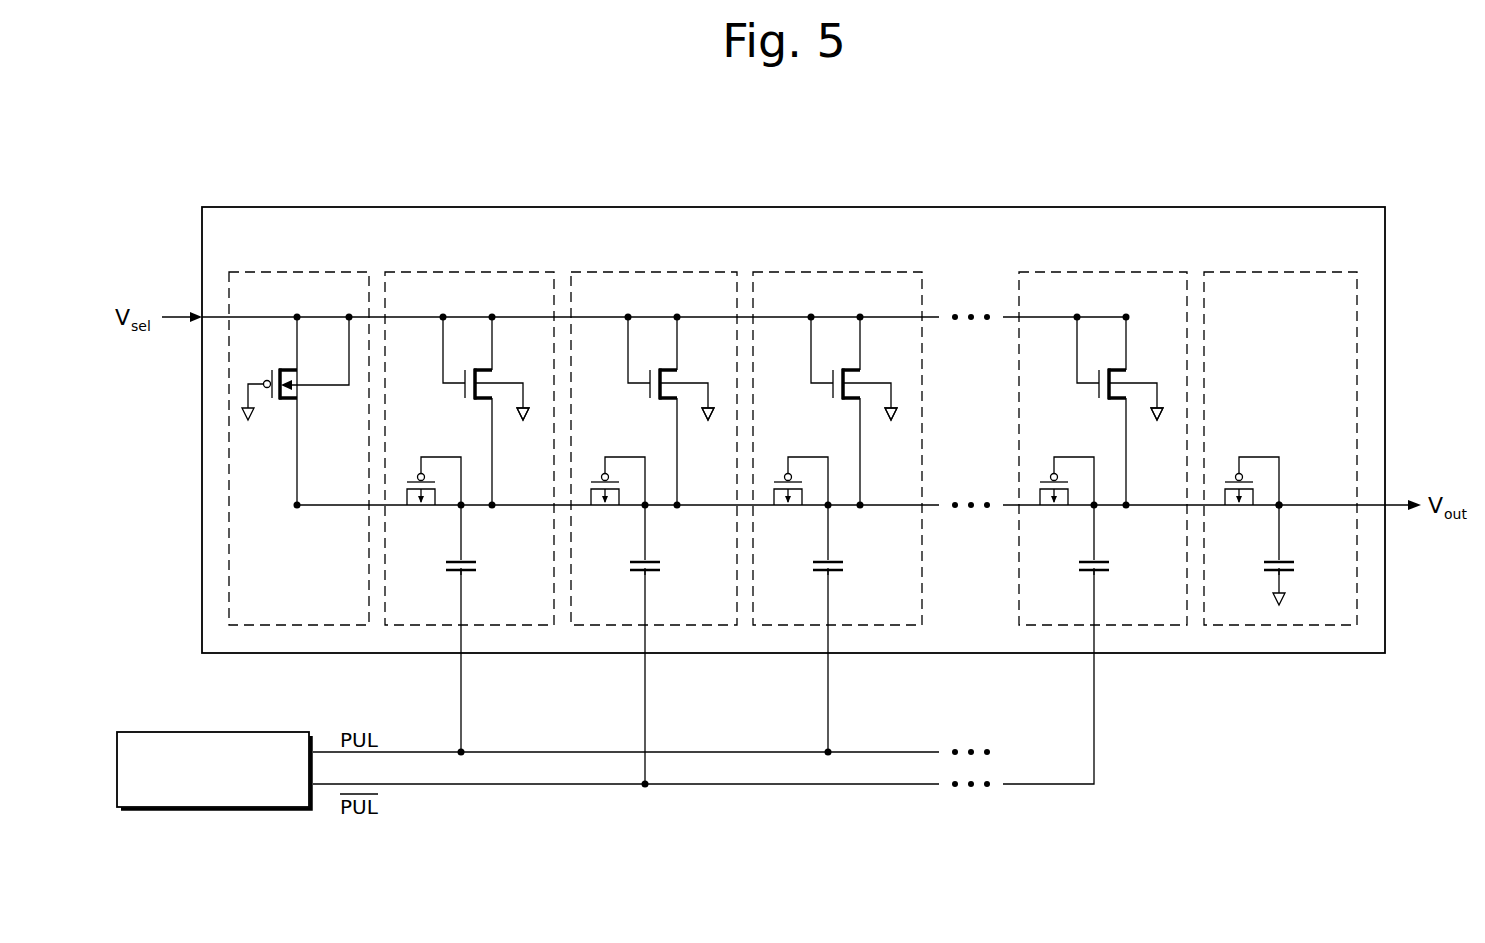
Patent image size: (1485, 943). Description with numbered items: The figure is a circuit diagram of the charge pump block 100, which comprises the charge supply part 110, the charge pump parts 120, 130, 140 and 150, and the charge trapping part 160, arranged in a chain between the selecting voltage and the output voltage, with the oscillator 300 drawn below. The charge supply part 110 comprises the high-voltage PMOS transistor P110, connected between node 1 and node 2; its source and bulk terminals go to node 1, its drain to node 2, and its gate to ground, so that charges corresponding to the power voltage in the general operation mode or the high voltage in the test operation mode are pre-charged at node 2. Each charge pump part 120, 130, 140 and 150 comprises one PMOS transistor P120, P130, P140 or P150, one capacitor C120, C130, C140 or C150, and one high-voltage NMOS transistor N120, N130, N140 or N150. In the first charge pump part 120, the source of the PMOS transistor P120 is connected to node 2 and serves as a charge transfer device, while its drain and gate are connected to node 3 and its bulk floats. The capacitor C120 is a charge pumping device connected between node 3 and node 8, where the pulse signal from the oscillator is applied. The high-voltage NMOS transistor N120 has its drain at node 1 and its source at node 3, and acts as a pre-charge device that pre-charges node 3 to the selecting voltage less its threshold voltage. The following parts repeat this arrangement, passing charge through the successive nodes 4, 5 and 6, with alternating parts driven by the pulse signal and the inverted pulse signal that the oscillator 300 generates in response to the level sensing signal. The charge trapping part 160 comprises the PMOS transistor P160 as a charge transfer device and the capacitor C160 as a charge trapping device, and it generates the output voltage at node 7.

The charge pump block 100 is at (1049, 208).
The charge supply part 110 is at (328, 272).
The charge pump part 120 is at (514, 272).
The charge pump part 130 is at (697, 272).
The charge pump part 140 is at (882, 272).
The charge pump part 150 is at (1147, 272).
The charge trapping part 160 is at (1317, 272).
The oscillator 300 is at (256, 731).
The node 1 is at (297, 303).
The node 2 is at (306, 494).
The node 3 is at (500, 494).
The node 4 is at (685, 494).
The node 5 is at (868, 494).
The node 6 is at (1135, 494).
The node 7 is at (1288, 494).
The node 8 is at (471, 741).
The high-voltage PMOS transistor P110 is at (297, 410).
The high-voltage NMOS transistor N120 is at (496, 410).
The high-voltage NMOS transistor N130 is at (681, 410).
The high-voltage NMOS transistor N140 is at (864, 410).
The high-voltage NMOS transistor N150 is at (1130, 410).
The PMOS transistor P120 is at (438, 516).
The PMOS transistor P130 is at (622, 516).
The PMOS transistor P140 is at (805, 516).
The PMOS transistor P150 is at (1071, 516).
The PMOS transistor P160 is at (1256, 516).
The capacitor C120 is at (497, 653).
The capacitor C130 is at (680, 671).
The capacitor C140 is at (863, 655).
The capacitor C150 is at (1085, 669).
The capacitor C160 is at (1312, 580).